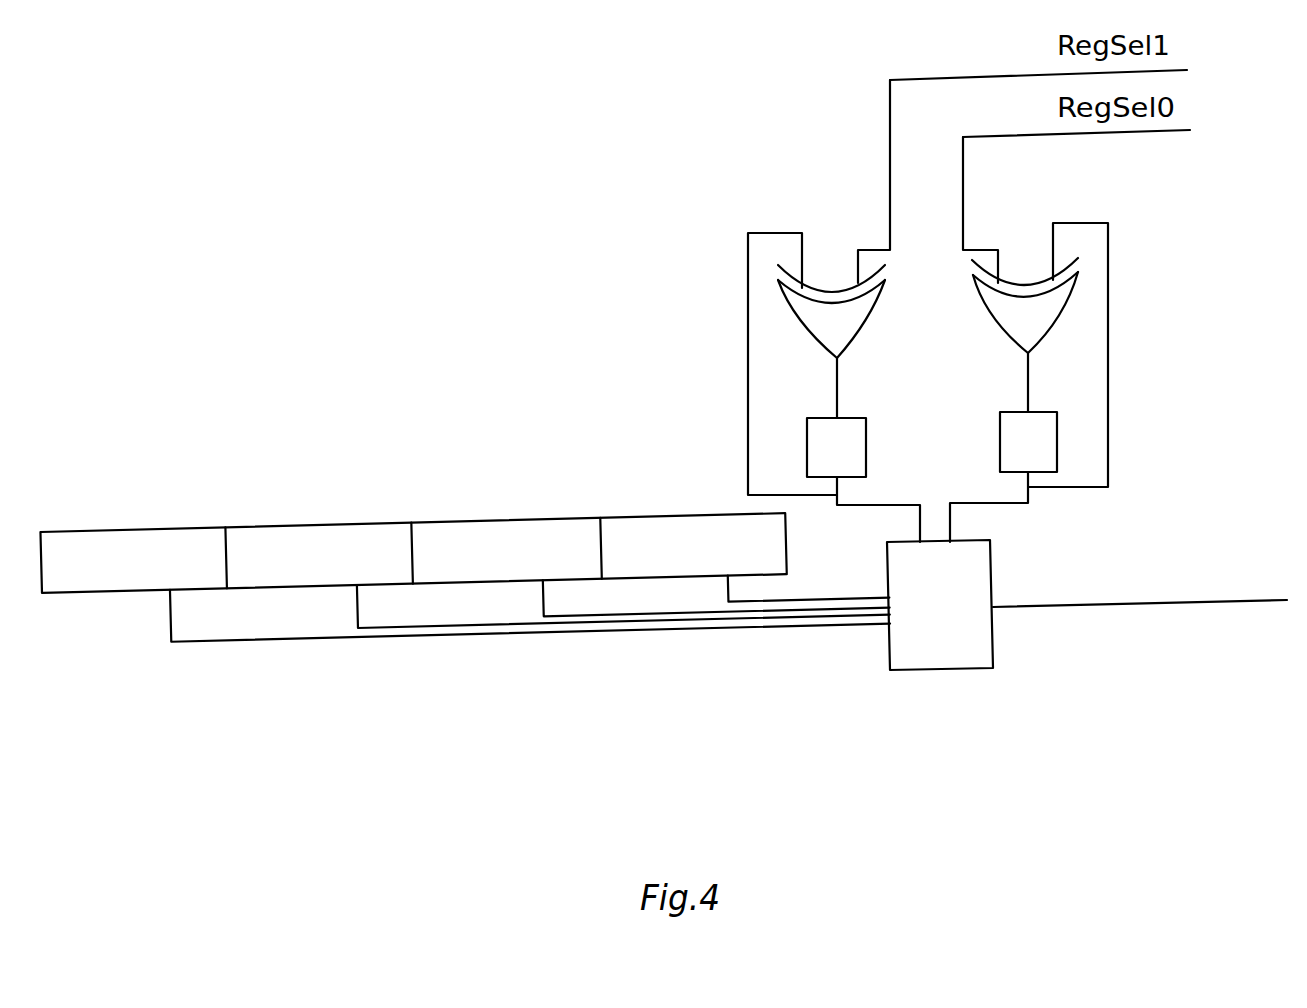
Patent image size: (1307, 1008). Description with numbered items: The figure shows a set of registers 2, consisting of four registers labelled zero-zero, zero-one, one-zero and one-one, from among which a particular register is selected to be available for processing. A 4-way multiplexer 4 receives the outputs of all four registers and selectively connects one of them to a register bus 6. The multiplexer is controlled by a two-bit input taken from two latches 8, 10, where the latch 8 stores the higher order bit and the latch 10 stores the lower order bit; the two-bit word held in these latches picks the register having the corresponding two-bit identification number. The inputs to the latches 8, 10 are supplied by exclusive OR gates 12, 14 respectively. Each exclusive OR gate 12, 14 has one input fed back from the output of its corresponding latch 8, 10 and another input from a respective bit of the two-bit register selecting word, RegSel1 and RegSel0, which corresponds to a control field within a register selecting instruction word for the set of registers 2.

The set of registers 2 is at (258, 354).
The 4-way multiplexer 4 is at (922, 670).
The register bus 6 is at (1103, 603).
The latch 8 is at (866, 443).
The latch 10 is at (1000, 428).
The exclusive OR gate 12 is at (848, 345).
The exclusive OR gate 14 is at (988, 312).